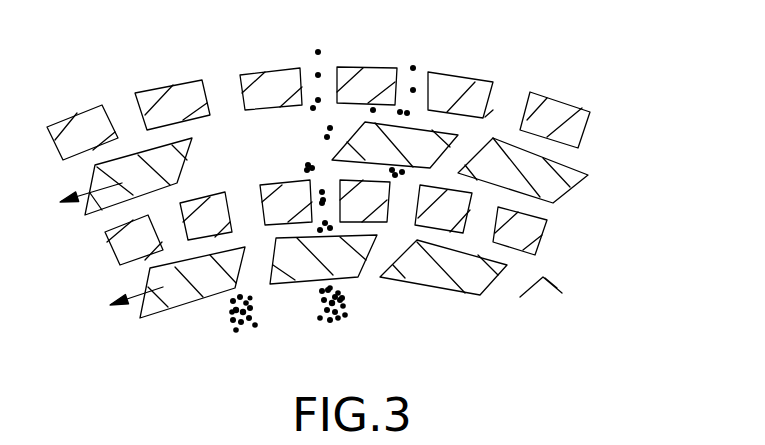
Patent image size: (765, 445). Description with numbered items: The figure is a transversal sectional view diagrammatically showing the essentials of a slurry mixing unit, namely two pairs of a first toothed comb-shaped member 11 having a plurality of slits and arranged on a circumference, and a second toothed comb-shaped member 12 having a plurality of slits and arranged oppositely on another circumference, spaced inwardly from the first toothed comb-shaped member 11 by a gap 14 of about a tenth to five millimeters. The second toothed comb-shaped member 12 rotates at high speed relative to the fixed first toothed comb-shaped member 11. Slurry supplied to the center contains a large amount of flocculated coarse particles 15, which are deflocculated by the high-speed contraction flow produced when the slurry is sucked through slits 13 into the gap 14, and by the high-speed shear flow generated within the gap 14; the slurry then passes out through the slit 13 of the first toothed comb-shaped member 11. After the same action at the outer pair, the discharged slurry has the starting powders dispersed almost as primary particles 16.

The first toothed comb-shaped member 11 is at (575, 115).
The second toothed comb-shaped member 12 is at (562, 185).
The slit 13 is at (516, 95).
The gap 14 is at (572, 157).
The flocculated coarse particles 15 is at (318, 322).
The primary particles 16 is at (318, 52).